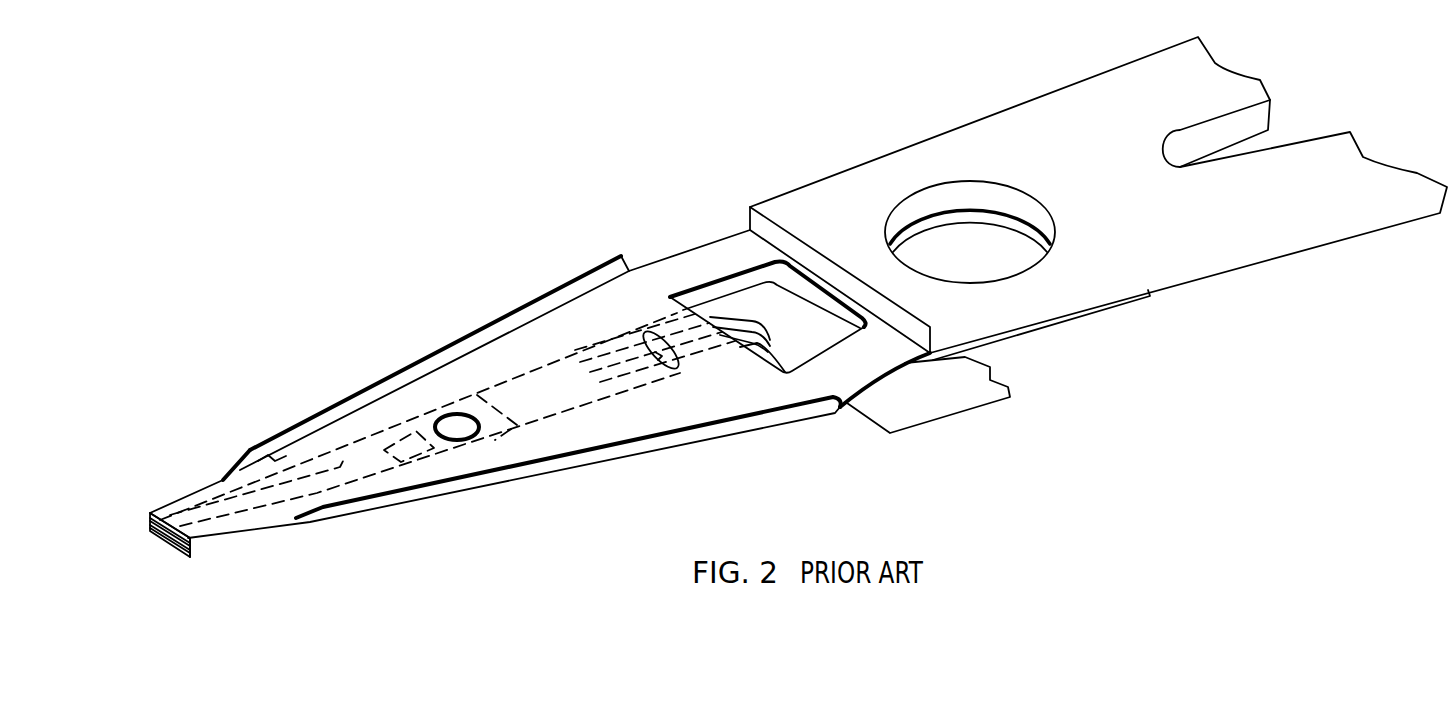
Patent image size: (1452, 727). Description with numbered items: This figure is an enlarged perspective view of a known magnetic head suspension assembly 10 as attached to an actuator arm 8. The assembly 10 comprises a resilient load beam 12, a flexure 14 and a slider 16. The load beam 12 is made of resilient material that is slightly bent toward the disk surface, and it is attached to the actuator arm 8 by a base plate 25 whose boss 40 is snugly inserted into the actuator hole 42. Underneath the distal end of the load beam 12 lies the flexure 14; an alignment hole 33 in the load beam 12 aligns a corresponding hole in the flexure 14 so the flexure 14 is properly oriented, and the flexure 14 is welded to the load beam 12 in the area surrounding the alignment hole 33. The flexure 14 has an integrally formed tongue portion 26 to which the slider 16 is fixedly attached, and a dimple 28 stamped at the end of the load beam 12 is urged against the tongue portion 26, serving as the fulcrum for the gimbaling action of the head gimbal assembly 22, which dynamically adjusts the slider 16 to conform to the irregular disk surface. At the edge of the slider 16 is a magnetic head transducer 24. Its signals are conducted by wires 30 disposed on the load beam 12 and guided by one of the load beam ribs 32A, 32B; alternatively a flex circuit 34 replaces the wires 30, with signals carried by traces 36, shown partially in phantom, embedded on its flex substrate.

The actuator arm 8 is at (1066, 96).
The magnetic head suspension assembly 10 is at (437, 336).
The load beam 12 is at (642, 320).
The flexure 14 is at (527, 477).
The slider 16 is at (150, 523).
The head gimbal assembly 22 is at (172, 483).
The magnetic head transducer 24 is at (163, 541).
The base plate 25 is at (1097, 310).
The tongue portion 26 is at (202, 538).
The dimple 28 is at (175, 545).
The wires 30 is at (343, 417).
The load beam rib 32A is at (522, 306).
The load beam rib 32B is at (613, 435).
The alignment hole 33 is at (455, 438).
The flex circuit 34 is at (943, 413).
The traces 36 is at (668, 372).
The boss 40 is at (967, 217).
The actuator hole 42 is at (930, 187).